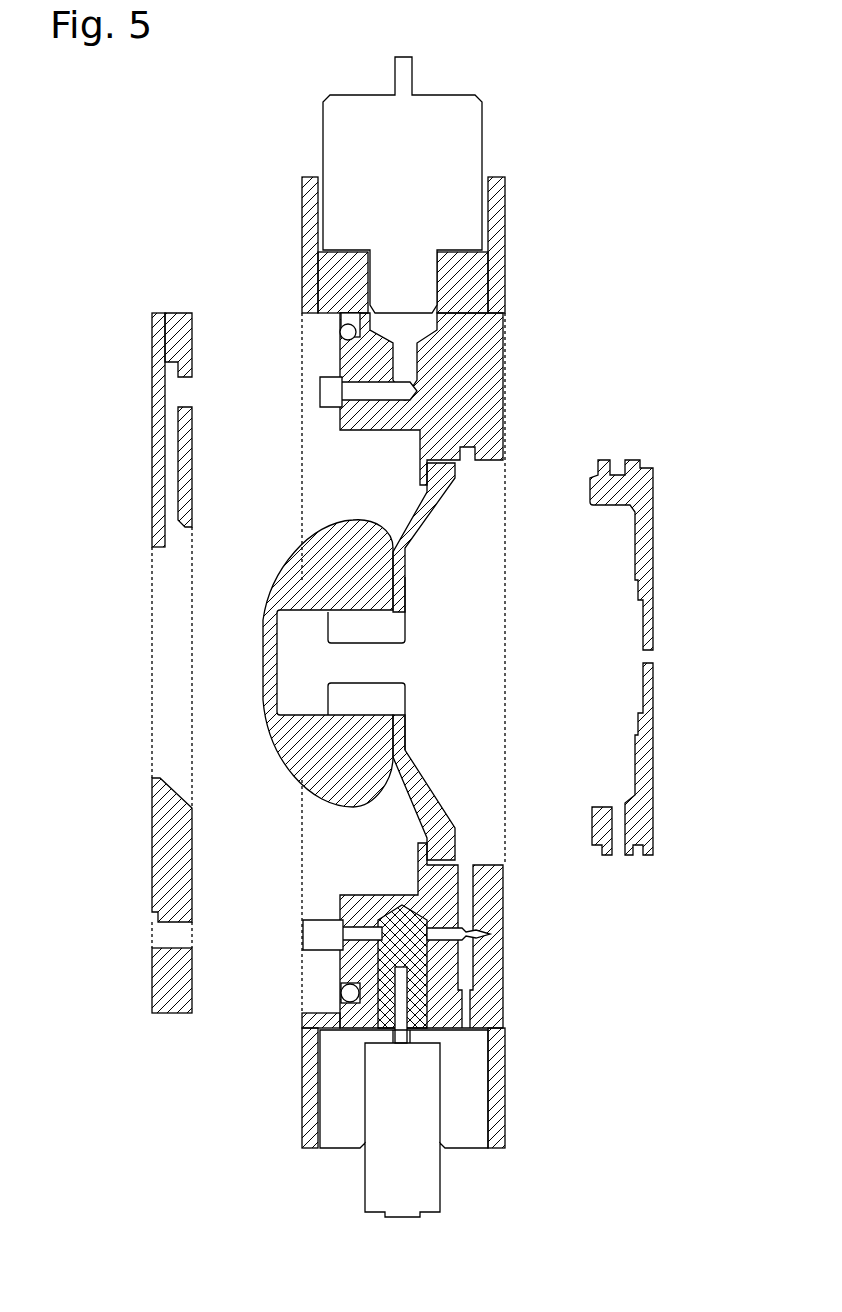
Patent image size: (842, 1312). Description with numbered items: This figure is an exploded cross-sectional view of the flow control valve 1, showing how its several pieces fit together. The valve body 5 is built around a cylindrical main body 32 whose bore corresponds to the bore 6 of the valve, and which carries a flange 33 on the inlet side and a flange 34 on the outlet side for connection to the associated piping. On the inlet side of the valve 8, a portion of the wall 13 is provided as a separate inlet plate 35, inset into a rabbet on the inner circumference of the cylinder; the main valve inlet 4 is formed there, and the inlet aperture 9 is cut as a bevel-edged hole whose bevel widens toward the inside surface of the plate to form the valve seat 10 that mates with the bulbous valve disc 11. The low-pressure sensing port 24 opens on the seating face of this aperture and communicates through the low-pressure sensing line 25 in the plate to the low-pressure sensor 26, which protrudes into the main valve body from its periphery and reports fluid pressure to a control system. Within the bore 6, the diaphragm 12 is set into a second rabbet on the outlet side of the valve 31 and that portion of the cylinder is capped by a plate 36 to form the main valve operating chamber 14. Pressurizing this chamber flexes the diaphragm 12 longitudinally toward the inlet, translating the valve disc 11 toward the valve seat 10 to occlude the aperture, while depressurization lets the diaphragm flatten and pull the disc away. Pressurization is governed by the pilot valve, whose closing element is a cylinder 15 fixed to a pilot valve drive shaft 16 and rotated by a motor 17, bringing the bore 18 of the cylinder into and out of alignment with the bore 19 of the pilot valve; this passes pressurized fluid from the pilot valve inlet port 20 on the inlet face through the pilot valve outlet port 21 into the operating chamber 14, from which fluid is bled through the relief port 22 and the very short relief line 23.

The flow control valve 1 is at (276, 124).
The main valve inlet 4 is at (128, 612).
The valve body 5 is at (302, 270).
The bore 6 is at (376, 480).
The inlet side of the valve 8 is at (150, 483).
The inlet aperture 9 is at (158, 752).
The valve seat 10 is at (196, 815).
The bulbous valve disc 11 is at (272, 745).
The diaphragm 12 is at (417, 530).
The wall of the inlet side 13 is at (302, 305).
The main valve operating chamber 14 is at (445, 562).
The cylinder 15 is at (412, 968).
The pilot valve drive shaft 16 is at (412, 1037).
The motor 17 is at (365, 1183).
The bore of the cylinder 18 is at (385, 935).
The bore of the pilot valve 19 is at (490, 935).
The pilot valve inlet port 20 is at (135, 932).
The pilot valve outlet port 21 is at (620, 800).
The relief port 22 is at (615, 690).
The relief line 23 is at (658, 658).
The low-pressure sensing port 24 is at (165, 542).
The low-pressure sensing line 25 is at (165, 428).
The low-pressure sensor 26 is at (325, 148).
The outlet side of the valve 31 is at (658, 500).
The cylindrical main body 32 is at (505, 953).
The inlet-side flange 33 is at (302, 200).
The outlet-side flange 34 is at (505, 220).
The inlet plate 35 is at (152, 385).
The plate 36 is at (652, 553).